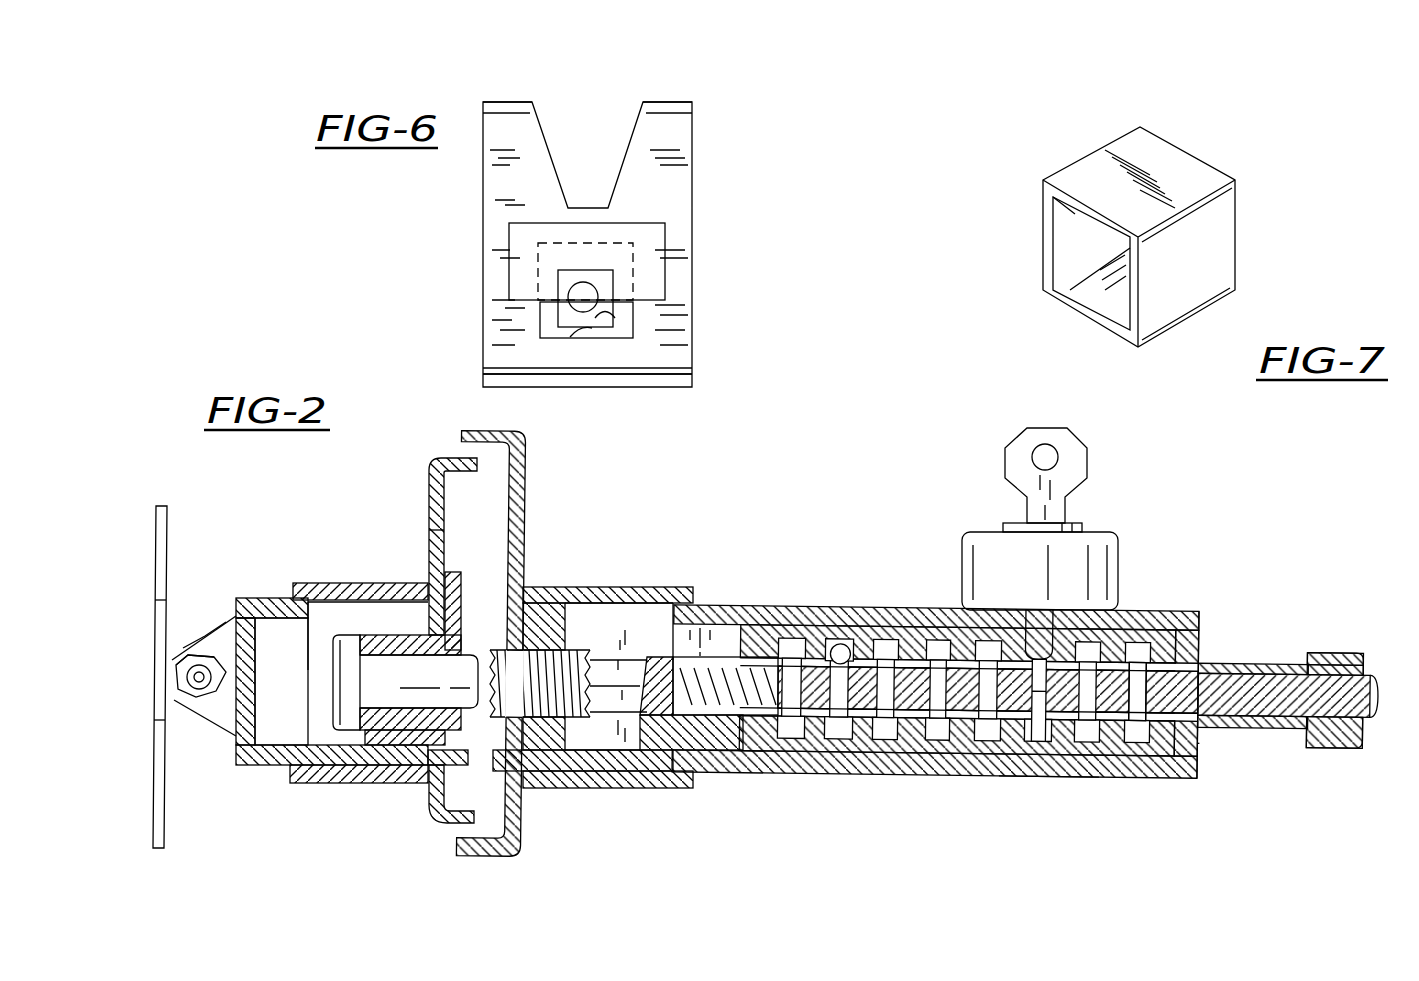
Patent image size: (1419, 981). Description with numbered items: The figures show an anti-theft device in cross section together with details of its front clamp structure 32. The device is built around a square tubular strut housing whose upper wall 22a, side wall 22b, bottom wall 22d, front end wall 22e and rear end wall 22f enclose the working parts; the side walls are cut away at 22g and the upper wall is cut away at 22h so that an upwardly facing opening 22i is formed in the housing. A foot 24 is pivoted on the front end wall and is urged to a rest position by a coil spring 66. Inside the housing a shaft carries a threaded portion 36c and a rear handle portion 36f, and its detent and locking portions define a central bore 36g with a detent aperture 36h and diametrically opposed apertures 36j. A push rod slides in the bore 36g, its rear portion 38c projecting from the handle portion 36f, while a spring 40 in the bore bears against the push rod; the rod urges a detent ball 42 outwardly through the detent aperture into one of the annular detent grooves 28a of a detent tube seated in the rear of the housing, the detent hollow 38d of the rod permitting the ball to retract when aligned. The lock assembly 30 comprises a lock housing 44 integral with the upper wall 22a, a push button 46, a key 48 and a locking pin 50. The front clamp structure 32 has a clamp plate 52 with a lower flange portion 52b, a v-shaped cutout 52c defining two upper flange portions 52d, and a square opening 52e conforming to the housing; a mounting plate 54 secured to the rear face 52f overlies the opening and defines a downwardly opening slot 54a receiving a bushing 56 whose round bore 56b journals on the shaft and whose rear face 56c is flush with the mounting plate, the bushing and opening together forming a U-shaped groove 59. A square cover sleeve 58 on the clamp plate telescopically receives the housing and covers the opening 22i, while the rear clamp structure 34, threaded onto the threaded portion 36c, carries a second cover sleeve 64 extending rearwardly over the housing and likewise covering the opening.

In FIG. 2, the upper wall 22a is at (858, 610).
In FIG. 2, the side wall 22b is at (222, 644).
In FIG. 2, the bottom wall 22d is at (1049, 776).
In FIG. 2, the front end wall 22e is at (238, 600).
In FIG. 2, the rear end wall 22f is at (1205, 638).
In FIG. 2, the side wall cutaway 22g is at (1217, 735).
In FIG. 2, the top wall cutaway 22h is at (320, 583).
In FIG. 2, the upwardly facing opening 22i is at (649, 612).
In FIG. 2, the foot 24 is at (157, 503).
In FIG. 2, the annular detent grooves 28a is at (792, 740).
In FIG. 2, the lock assembly 30 is at (975, 470).
In FIG. 2, the front clamp structure 32 is at (432, 470).
In FIG. 2, the rear clamp structure 34 is at (534, 513).
In FIG. 2, the threaded portion 36c is at (938, 650).
In FIG. 2, the rear handle portion 36f is at (1314, 648).
In FIG. 2, the central bore 36g is at (1086, 740).
In FIG. 2, the detent aperture 36h is at (822, 640).
In FIG. 2, the apertures 36j is at (935, 745).
In FIG. 2, the rear portion 38c is at (1378, 668).
In FIG. 2, the detent hollow 38d is at (893, 670).
In FIG. 2, the spring 40 is at (708, 772).
In FIG. 2, the detent ball 42 is at (840, 645).
In FIG. 2, the lock housing 44 is at (967, 530).
In FIG. 2, the push button 46 is at (1090, 532).
In FIG. 2, the key 48 is at (1088, 470).
In FIG. 2, the locking pin 50 is at (1085, 625).
In FIG. 2, the clamp plate 52 is at (429, 498).
In FIG. 6, the lower flange portion 52b is at (493, 377).
In FIG. 6, the v-shaped cutout 52c is at (555, 143).
In FIG. 6, the upper flange portions 52d is at (500, 104).
In FIG. 6, the square opening 52e is at (623, 317).
In FIG. 6, the rear face 52f is at (630, 203).
In FIG. 2, the mounting plate 54 is at (448, 572).
In FIG. 6, the mounting plate 54 is at (527, 207).
In FIG. 6, the slot 54a is at (583, 282).
In FIG. 2, the bushing 56 is at (412, 632).
In FIG. 6, the bore 56b is at (613, 300).
In FIG. 6, the rear face 56c is at (592, 322).
In FIG. 2, the cover sleeve 58 is at (365, 583).
In FIG. 7, the cover sleeve 58 is at (1222, 170).
In FIG. 6, the U-shaped groove 59 is at (627, 330).
In FIG. 2, the cover sleeve 64 is at (193, 662).
In FIG. 2, the coil spring 66 is at (185, 693).